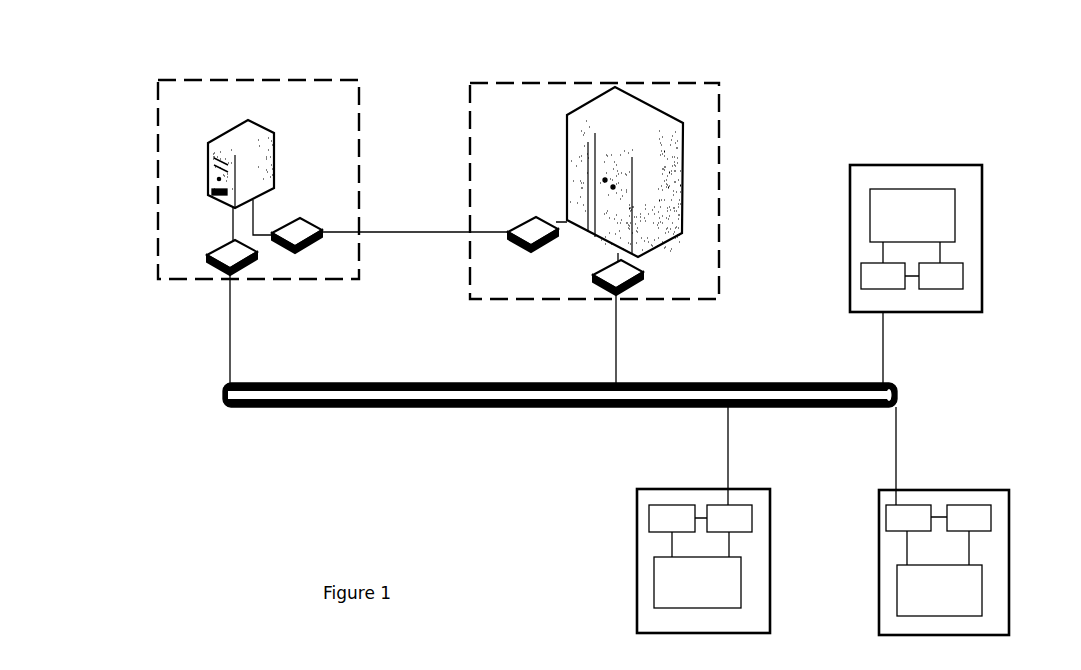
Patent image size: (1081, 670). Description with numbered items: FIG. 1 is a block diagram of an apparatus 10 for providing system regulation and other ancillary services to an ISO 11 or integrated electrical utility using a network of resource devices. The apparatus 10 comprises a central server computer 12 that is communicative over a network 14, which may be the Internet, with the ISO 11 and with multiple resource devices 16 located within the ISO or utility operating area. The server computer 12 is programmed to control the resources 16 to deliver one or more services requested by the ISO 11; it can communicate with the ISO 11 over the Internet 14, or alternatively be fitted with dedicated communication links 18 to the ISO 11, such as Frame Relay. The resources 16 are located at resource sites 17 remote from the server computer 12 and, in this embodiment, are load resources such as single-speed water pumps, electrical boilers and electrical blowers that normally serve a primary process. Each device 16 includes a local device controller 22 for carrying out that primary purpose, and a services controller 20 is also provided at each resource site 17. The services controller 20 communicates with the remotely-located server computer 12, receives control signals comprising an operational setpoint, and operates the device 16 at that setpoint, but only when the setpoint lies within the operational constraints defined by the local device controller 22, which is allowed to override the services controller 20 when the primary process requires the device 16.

The apparatus 10 is at (843, 92).
The ISO 11 is at (359, 120).
The central server computer 12 is at (719, 120).
The network 14 is at (428, 398).
The resource device 16 is at (870, 217).
The resource site 17 is at (982, 188).
The dedicated communication link 18 is at (380, 232).
The services controller 20 is at (861, 275).
The local device controller 22 is at (963, 275).